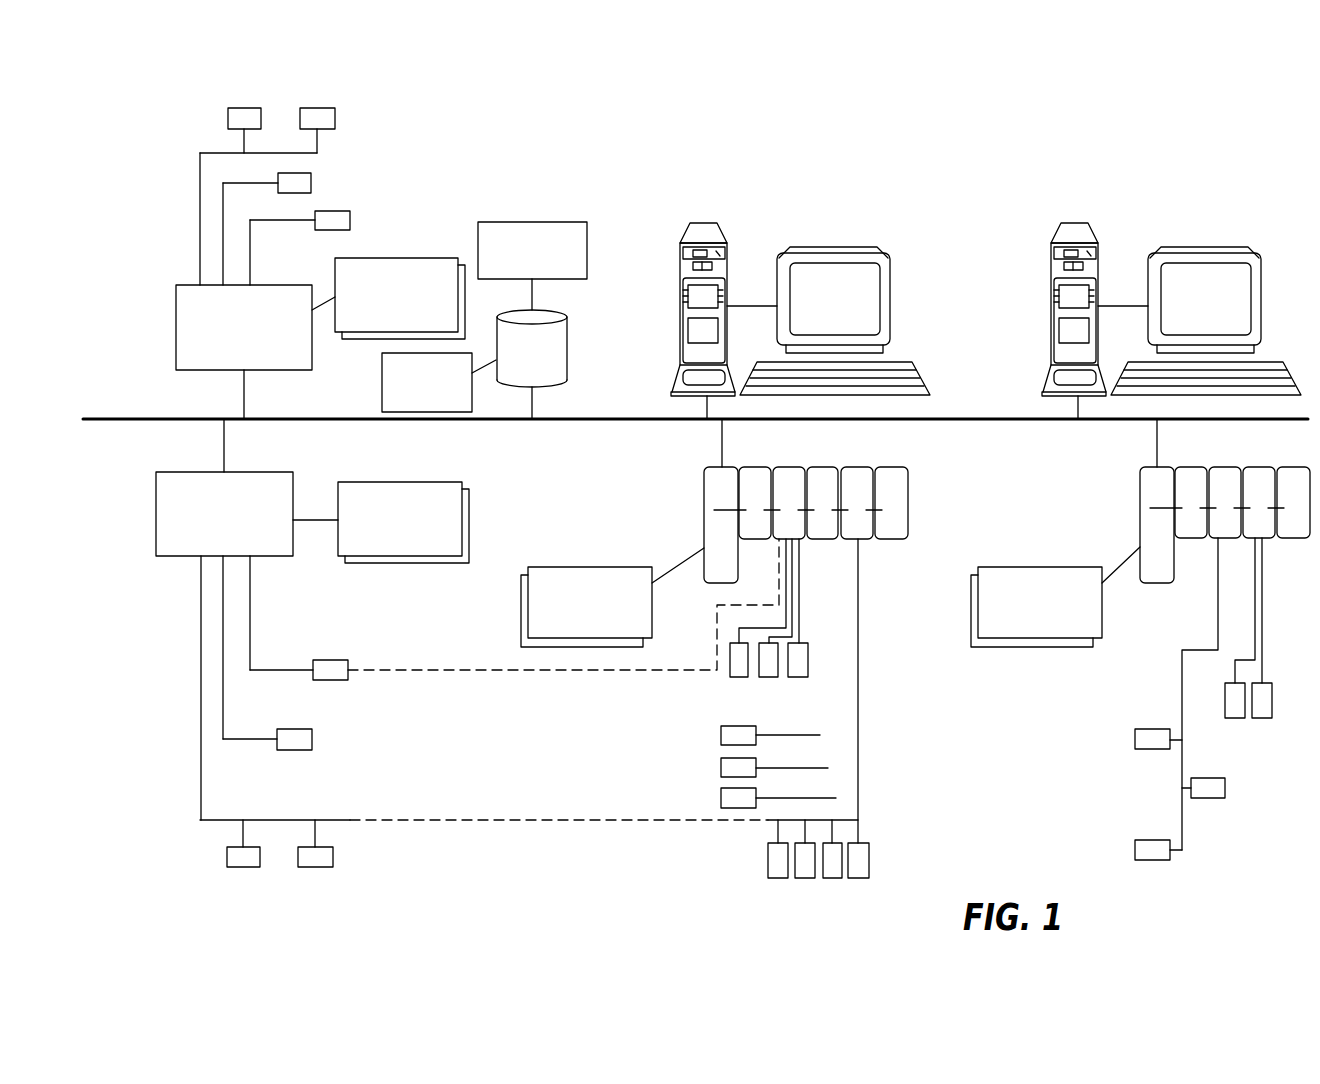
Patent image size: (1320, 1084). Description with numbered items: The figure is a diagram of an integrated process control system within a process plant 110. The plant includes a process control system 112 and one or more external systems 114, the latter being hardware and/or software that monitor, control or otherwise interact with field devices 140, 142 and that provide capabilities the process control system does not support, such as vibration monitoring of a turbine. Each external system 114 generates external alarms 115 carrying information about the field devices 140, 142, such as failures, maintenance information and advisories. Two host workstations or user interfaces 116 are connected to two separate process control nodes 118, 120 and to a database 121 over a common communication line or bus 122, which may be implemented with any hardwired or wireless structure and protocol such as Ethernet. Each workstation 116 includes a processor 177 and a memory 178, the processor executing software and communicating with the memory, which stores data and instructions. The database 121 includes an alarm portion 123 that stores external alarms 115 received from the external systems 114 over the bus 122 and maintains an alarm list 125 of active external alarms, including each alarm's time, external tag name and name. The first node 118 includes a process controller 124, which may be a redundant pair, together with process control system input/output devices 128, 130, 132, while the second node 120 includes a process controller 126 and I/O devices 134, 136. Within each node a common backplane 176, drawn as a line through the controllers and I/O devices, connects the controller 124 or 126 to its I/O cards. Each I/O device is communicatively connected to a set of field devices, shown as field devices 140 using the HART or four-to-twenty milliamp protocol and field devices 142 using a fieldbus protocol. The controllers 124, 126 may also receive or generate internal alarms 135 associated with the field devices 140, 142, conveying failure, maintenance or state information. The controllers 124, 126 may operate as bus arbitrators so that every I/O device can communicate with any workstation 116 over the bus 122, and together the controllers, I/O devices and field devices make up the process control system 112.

The process plant 110 is at (682, 170).
The process control system 112 is at (545, 871).
The external system 114 is at (176, 320).
The external alarm 115 is at (438, 258).
The user interface 116 is at (680, 252).
The process control node 118 is at (755, 517).
The process control node 120 is at (1163, 520).
The database 121 is at (548, 311).
The communication bus 122 is at (965, 417).
The alarm portion 123 is at (540, 222).
The process controller 124 is at (707, 583).
The alarm list 125 is at (382, 393).
The process controller 126 is at (1158, 584).
The process control system input/output device 128 is at (791, 466).
The process control system input/output device 130 is at (828, 466).
The process control system input/output device 132 is at (855, 466).
The process control system input/output device 134 is at (1226, 466).
The process control system input/output device 136 is at (1265, 466).
The internal alarm 135 is at (585, 567).
The field device 140 is at (311, 183).
The field device 142 is at (212, 118).
The common backplane 176 is at (722, 512).
The processor 177 is at (688, 340).
The memory 178 is at (688, 285).